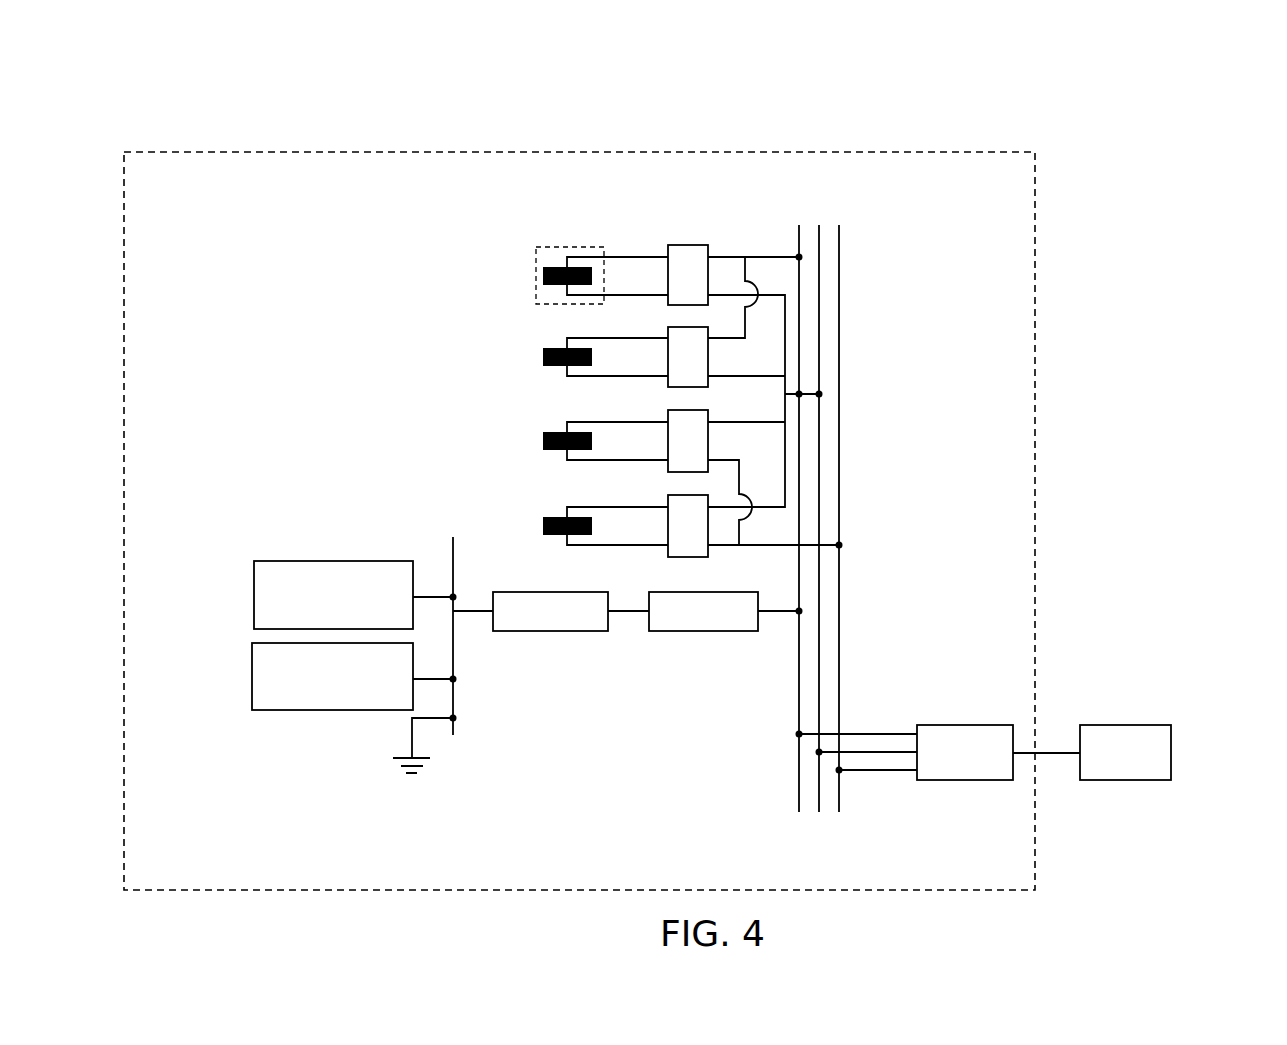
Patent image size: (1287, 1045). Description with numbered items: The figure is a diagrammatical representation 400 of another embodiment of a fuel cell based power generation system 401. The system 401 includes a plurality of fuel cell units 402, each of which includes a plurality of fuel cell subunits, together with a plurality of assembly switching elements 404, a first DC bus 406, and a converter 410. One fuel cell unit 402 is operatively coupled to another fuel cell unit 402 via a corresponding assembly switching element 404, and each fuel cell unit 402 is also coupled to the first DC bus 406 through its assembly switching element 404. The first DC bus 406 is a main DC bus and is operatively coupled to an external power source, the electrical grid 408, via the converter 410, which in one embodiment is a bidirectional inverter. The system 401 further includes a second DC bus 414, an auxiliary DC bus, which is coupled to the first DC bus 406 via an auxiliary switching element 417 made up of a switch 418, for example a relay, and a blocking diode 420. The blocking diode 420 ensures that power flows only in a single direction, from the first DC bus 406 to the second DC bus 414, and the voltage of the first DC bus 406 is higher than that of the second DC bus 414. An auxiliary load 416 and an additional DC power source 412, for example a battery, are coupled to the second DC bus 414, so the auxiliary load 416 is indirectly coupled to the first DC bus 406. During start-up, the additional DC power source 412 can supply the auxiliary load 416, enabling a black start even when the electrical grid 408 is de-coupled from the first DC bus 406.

The diagrammatical representation 400 is at (1178, 63).
The fuel cell based power generation system 401 is at (958, 152).
The fuel cell unit 402 is at (552, 432).
The assembly switching element 404 is at (693, 327).
The first DC bus 406 is at (793, 813).
The electrical grid 408 is at (1123, 725).
The converter 410 is at (958, 725).
The additional DC power source 412 is at (252, 679).
The second DC bus 414 is at (453, 537).
The auxiliary load 416 is at (254, 598).
The auxiliary switching element 417 is at (648, 662).
The switch 418 is at (550, 632).
The blocking diode 420 is at (702, 632).